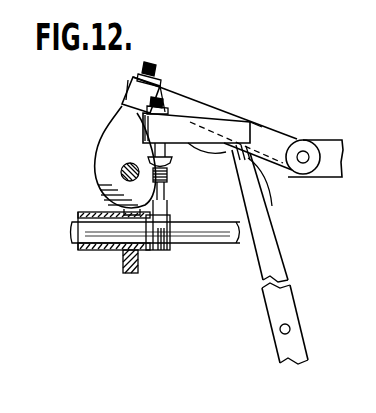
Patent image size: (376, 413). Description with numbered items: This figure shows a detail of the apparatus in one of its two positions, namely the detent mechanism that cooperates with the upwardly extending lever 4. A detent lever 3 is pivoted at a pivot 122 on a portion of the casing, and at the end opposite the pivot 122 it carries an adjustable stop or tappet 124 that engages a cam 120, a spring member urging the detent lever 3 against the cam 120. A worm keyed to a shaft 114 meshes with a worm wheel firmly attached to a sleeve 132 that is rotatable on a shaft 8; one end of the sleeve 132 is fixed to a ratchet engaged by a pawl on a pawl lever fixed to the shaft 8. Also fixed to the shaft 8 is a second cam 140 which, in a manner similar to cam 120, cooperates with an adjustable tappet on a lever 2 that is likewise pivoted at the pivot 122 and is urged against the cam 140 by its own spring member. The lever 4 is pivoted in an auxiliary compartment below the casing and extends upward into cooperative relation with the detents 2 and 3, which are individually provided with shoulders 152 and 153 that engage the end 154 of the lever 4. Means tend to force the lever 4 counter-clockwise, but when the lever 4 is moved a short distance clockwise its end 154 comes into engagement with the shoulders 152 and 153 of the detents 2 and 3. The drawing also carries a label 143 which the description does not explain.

The lever 2 is at (260, 137).
The detent lever 3 is at (190, 102).
The lever 4 is at (278, 259).
The shaft 8 is at (204, 229).
The shaft 114 is at (121, 169).
The cam 120 is at (122, 146).
The pivot 122 is at (305, 156).
The adjustable stop or tappet 124 is at (154, 72).
The sleeve 132 is at (87, 248).
The cam 140 is at (170, 206).
The joint 143 is at (164, 100).
The shoulder 152 is at (233, 138).
The shoulder 153 is at (246, 130).
The end of lever 154 is at (263, 188).